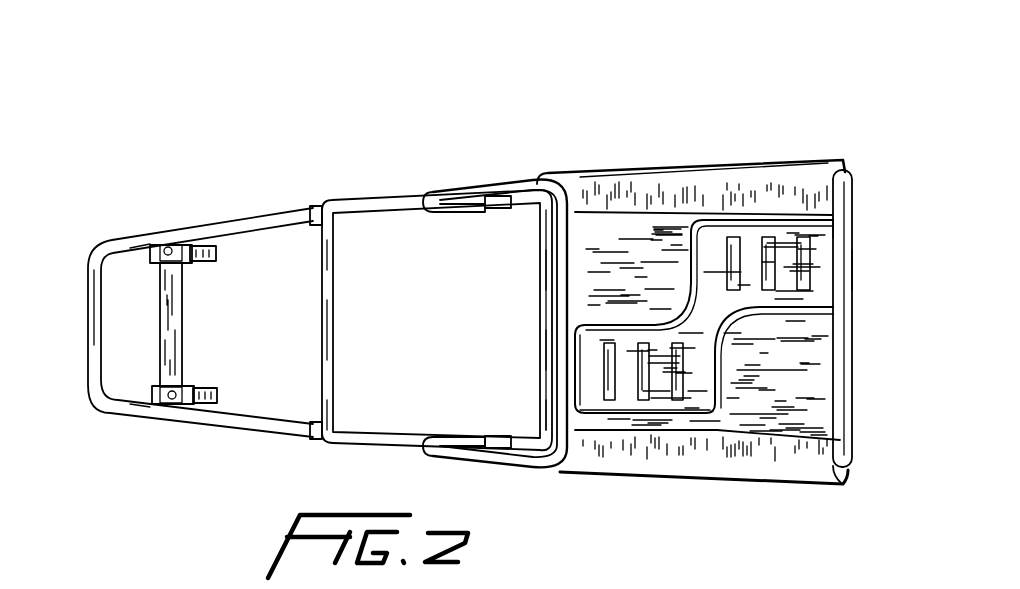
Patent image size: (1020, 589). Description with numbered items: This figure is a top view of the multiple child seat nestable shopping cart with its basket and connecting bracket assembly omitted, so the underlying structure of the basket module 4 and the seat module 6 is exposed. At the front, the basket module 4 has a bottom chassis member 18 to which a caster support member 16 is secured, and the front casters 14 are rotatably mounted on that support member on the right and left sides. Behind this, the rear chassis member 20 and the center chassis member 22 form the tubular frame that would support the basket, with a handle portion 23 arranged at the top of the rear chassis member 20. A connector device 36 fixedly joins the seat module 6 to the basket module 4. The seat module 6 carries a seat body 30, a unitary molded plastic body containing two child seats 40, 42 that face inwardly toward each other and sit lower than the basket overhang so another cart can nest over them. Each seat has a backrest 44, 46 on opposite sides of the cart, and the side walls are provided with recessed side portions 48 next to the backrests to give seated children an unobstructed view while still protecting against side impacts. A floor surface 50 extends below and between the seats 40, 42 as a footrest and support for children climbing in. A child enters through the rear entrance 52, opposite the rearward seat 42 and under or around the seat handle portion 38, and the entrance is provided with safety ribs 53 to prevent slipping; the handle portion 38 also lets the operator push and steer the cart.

The basket module 4 is at (335, 165).
The seat module 6 is at (740, 83).
The front casters 14 is at (217, 248).
The caster support member 16 is at (183, 338).
The bottom chassis member 18 is at (243, 212).
The rear chassis member 20 is at (514, 178).
The center chassis member 22 is at (337, 318).
The handle portion 23 is at (563, 322).
The seat body 30 is at (840, 158).
The connector device 36 is at (474, 213).
The seat handle portion 38 is at (847, 370).
The child seat 40 is at (658, 222).
The child seat 42 is at (847, 480).
The backrest 44 is at (591, 178).
The backrest 46 is at (807, 408).
The recessed side portions 48 is at (790, 176).
The floor surface 50 is at (822, 230).
The rear entrance 52 is at (864, 264).
The safety ribs 53 is at (745, 237).